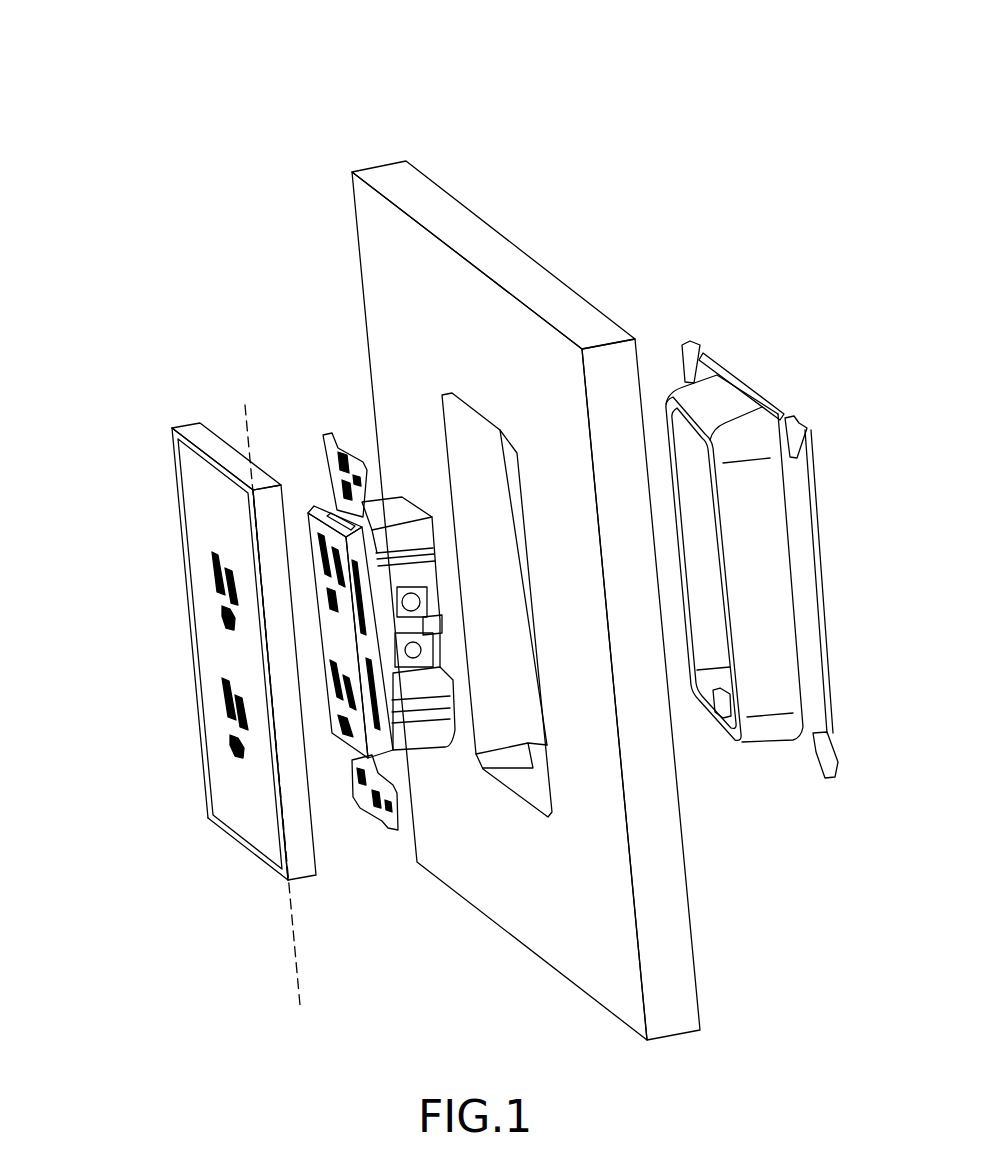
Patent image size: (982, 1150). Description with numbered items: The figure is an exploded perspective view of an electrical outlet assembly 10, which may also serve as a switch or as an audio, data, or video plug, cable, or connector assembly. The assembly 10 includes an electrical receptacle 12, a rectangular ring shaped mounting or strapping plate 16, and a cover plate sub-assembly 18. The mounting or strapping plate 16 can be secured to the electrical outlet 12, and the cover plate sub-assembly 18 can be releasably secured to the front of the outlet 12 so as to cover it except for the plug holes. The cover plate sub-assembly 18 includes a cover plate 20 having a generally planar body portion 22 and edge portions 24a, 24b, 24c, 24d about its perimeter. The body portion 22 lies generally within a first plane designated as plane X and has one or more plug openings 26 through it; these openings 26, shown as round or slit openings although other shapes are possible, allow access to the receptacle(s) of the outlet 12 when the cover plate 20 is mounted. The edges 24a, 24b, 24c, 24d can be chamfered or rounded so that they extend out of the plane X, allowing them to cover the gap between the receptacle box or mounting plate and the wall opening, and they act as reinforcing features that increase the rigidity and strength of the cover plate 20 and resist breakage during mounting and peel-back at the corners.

The electrical outlet assembly 10 is at (121, 106).
The electrical receptacle 12 is at (320, 417).
The rectangular ring shaped mounting or strapping plate 16 is at (749, 329).
The cover plate sub-assembly 18 is at (146, 426).
The cover plate 20 is at (146, 552).
The body portion 22 is at (208, 660).
The edge portion 24a is at (204, 446).
The edge portion 24b is at (285, 818).
The edge portion 24c is at (233, 838).
The edge portion 24d is at (178, 522).
The plug openings 26 is at (240, 750).
The plane X is at (305, 970).